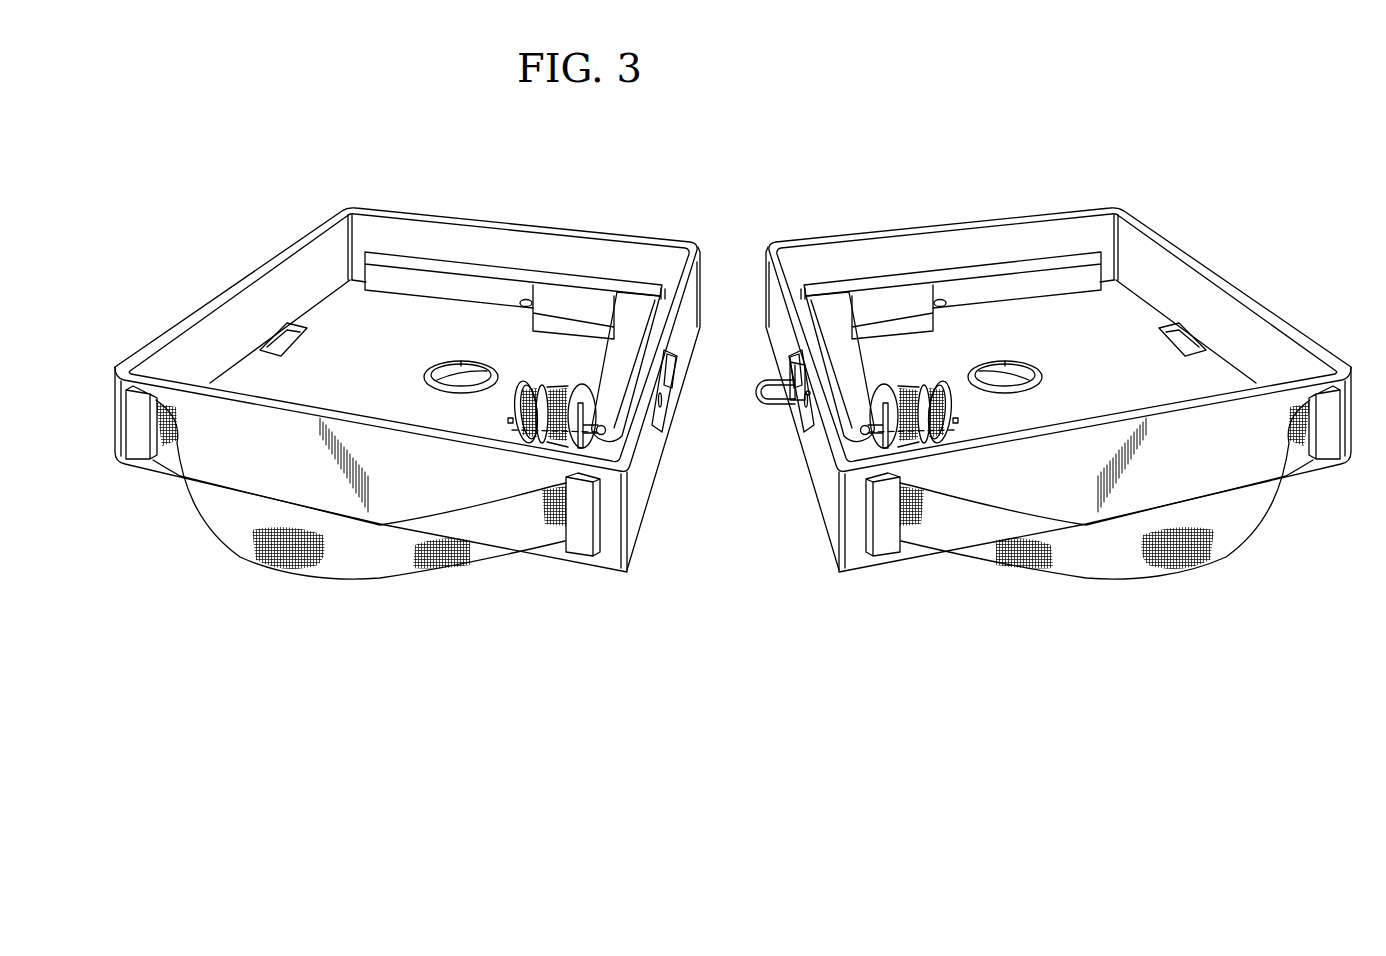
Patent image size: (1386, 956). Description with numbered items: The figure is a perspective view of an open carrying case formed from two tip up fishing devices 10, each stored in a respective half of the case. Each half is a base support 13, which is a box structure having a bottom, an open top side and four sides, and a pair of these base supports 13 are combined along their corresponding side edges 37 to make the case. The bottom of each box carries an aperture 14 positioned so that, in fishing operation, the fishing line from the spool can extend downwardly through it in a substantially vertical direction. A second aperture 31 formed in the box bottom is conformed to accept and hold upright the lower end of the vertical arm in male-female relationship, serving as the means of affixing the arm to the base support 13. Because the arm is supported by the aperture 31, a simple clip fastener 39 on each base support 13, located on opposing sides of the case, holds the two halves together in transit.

The tip up fishing device 10 is at (577, 262).
The base support 13 is at (577, 185).
The aperture 14 is at (460, 382).
The aperture 31 is at (308, 338).
The side edges 37 is at (432, 218).
The clip fastener 39 is at (800, 403).